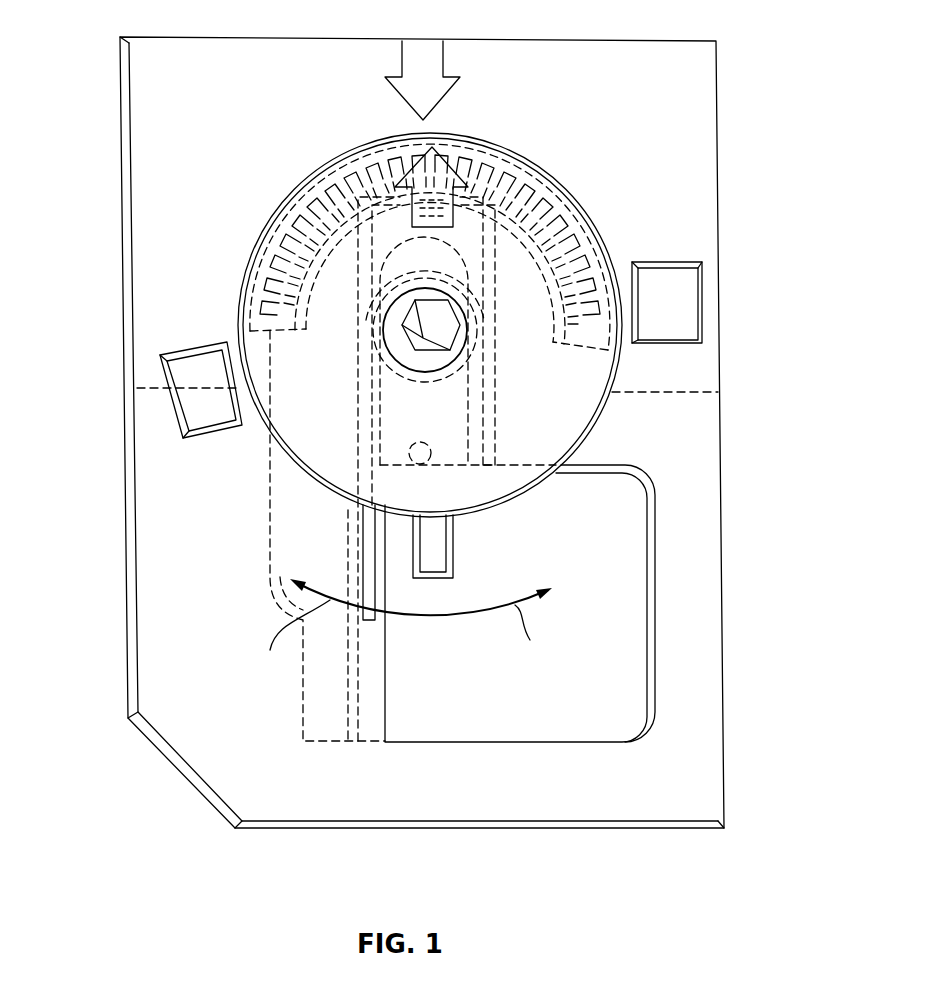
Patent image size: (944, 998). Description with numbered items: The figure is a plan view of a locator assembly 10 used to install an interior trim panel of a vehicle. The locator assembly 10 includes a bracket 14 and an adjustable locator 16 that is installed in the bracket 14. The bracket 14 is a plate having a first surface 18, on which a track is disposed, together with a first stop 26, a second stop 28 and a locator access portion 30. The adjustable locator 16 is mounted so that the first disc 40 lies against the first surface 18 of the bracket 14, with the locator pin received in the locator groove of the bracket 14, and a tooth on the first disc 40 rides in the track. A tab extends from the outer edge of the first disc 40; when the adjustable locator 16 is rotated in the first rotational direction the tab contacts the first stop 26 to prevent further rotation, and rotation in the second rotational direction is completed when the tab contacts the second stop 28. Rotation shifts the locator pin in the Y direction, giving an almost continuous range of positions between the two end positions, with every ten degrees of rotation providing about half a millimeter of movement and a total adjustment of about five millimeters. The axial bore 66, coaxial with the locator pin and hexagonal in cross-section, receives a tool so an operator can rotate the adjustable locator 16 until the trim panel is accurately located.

The locator assembly 10 is at (764, 84).
The bracket 14 is at (366, 828).
The adjustable locator 16 is at (452, 437).
The first surface 18 is at (176, 522).
The first stop 26 is at (162, 372).
The second stop 28 is at (703, 284).
The locator access portion 30 is at (540, 742).
The first disc 40 is at (606, 406).
The axial bore 66 is at (443, 340).